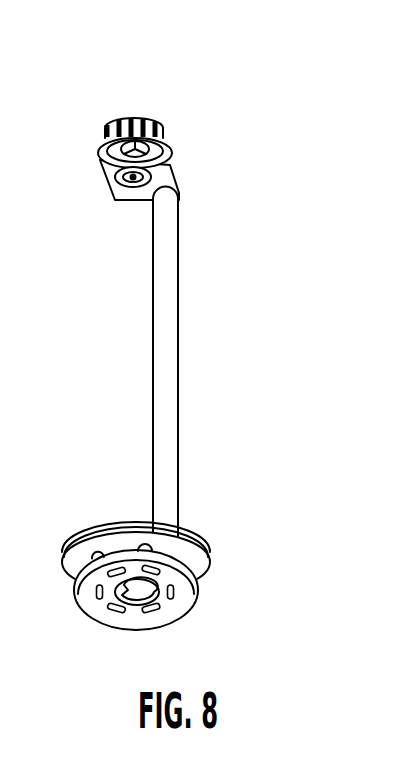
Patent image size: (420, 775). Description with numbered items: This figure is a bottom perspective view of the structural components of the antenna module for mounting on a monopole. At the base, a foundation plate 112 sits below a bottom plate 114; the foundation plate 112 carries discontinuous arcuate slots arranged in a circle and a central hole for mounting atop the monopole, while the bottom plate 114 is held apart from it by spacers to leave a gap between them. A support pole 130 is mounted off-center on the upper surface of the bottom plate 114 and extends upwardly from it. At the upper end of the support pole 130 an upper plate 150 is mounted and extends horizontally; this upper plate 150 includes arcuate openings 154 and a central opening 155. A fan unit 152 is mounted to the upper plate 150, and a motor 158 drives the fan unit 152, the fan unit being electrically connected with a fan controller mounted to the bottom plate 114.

The foundation plate 112 is at (188, 593).
The bottom plate 114 is at (204, 560).
The support pole 130 is at (173, 358).
The upper plate 150 is at (175, 180).
The fan unit 152 is at (146, 110).
The arcuate openings 154 is at (165, 180).
The central opening 155 is at (125, 203).
The motor 158 is at (152, 110).